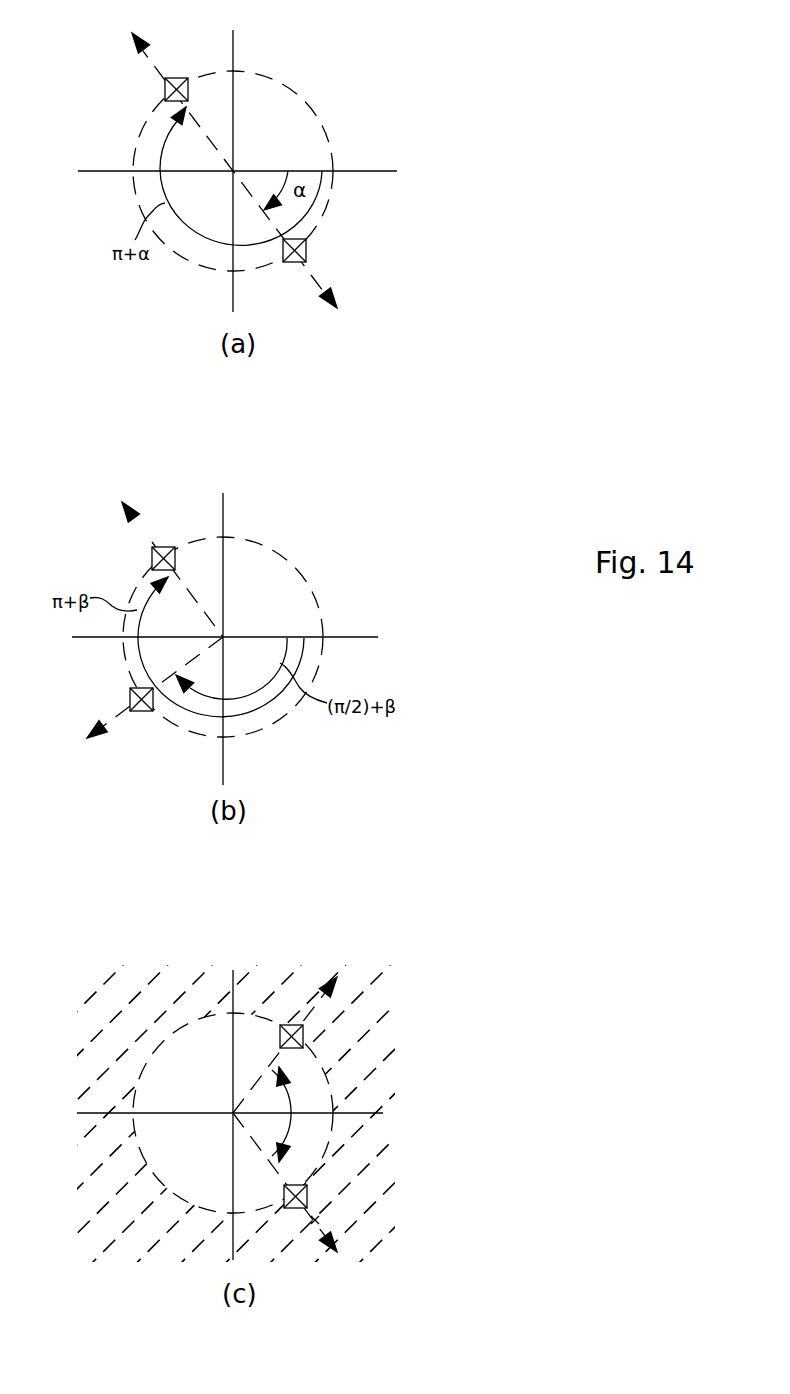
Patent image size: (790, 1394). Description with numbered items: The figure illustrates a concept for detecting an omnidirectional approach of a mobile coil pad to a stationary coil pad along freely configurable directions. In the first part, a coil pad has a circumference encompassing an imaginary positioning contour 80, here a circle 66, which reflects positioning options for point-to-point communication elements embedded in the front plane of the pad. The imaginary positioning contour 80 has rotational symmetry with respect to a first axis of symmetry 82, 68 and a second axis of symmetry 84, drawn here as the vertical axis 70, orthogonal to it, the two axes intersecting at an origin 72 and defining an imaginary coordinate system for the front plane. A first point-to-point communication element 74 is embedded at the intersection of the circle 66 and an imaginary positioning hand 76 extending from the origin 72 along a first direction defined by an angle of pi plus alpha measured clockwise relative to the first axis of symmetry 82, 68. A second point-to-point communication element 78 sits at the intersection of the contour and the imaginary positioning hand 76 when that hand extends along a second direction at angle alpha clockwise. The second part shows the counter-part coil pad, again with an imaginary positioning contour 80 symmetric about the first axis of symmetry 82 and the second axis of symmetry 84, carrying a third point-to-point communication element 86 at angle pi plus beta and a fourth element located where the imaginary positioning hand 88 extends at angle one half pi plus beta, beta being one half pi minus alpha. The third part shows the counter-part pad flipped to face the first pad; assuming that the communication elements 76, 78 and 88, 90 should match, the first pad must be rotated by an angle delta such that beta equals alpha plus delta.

The circle 66 is at (303, 99).
The first axis of symmetry 68 is at (382, 169).
The vertical axis 70 is at (236, 39).
The origin 72 is at (237, 168).
The first point-to-point communication element 74 is at (178, 78).
The imaginary positioning hand 76 is at (158, 70).
The second point-to-point communication element 78 is at (306, 250).
The imaginary positioning contour 80 is at (288, 565).
The first axis of symmetry 82 is at (368, 637).
The second axis of symmetry 84 is at (225, 503).
The first marker 86 is at (162, 548).
The imaginary positioning hand 88 is at (146, 537).
The point-to-point communication element 90 is at (145, 711).